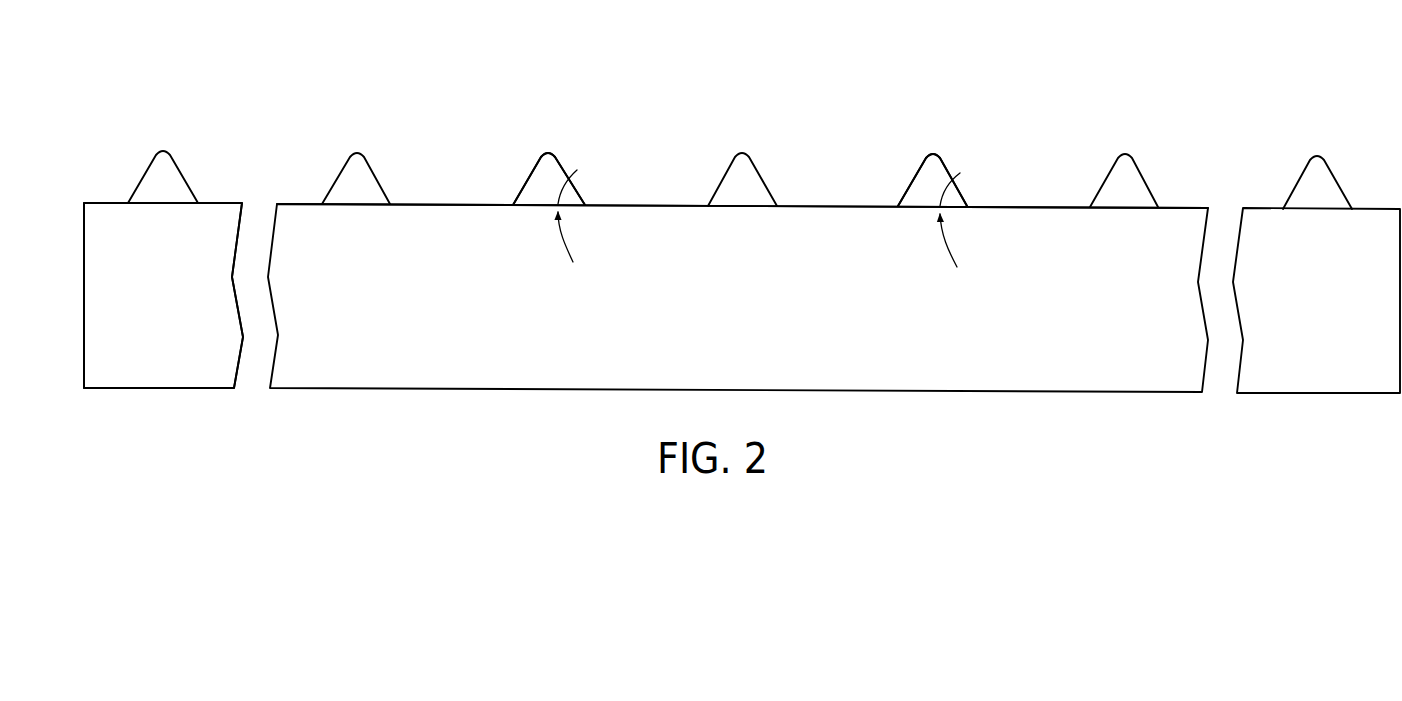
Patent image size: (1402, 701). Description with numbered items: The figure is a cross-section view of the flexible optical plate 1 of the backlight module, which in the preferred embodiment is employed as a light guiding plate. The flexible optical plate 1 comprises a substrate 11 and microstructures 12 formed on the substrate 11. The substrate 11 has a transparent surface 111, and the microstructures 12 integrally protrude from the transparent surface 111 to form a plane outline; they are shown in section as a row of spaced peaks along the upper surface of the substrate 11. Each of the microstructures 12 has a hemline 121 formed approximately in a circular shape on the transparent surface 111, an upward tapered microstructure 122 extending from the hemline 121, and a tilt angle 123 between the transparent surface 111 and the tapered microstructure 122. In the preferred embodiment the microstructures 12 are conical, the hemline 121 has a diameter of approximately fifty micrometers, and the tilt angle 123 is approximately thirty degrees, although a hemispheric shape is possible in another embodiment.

The flexible optical plate 1 is at (133, 145).
The substrate 11 is at (157, 352).
The transparent surface 111 is at (422, 204).
The microstructures 12 is at (549, 151).
The hemline 121 is at (532, 188).
The tapered microstructure 122 is at (540, 183).
The tilt angle 123 is at (576, 196).